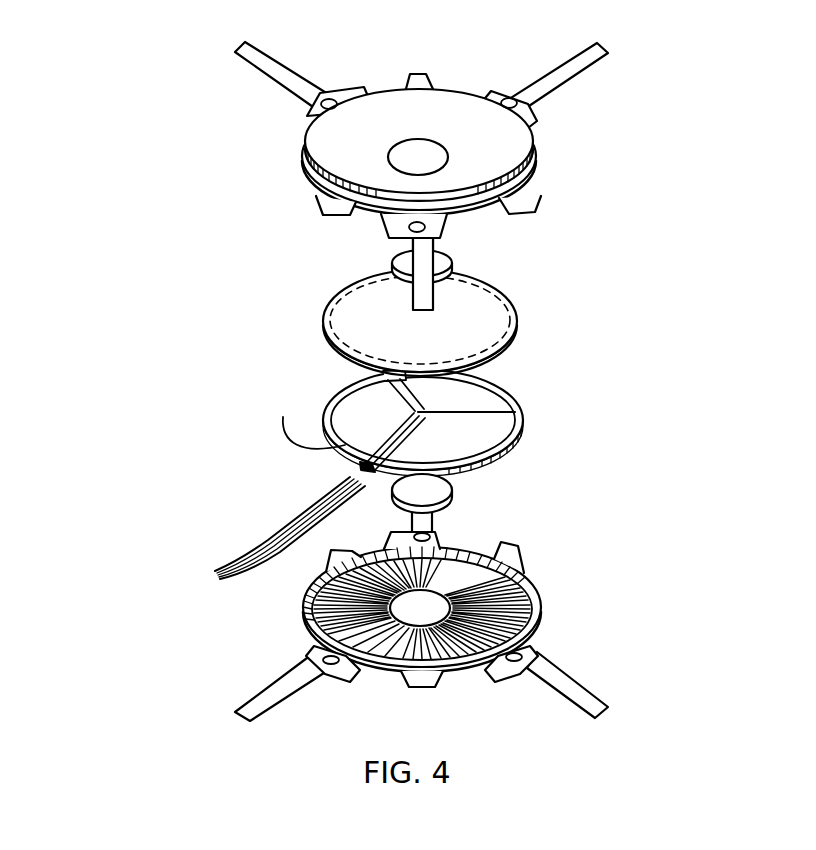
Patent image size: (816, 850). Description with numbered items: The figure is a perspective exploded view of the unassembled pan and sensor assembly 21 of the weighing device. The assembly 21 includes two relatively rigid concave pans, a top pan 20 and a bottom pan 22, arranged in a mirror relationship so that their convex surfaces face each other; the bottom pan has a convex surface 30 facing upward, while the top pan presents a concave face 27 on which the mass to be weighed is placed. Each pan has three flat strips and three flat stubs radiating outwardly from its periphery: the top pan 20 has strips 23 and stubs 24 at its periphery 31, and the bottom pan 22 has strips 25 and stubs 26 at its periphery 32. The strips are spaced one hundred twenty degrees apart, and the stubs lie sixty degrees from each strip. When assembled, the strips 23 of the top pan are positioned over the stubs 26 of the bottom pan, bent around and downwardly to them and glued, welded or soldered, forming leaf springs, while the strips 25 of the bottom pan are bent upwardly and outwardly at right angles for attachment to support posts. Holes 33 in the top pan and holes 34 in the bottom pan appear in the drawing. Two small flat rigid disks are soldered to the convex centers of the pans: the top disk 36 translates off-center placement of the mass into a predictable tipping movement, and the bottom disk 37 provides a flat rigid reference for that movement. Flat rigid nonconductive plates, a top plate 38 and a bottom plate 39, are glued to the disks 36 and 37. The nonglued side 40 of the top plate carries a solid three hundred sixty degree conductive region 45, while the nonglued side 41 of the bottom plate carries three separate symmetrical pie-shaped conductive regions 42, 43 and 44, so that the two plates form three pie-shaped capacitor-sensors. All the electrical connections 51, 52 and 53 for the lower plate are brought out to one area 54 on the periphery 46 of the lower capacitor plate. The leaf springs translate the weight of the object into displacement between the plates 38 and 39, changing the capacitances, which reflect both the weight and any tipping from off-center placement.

The pan and sensor assembly 21 is at (123, 150).
The top pan 20 is at (442, 95).
The bottom pan 22 is at (540, 590).
The flat strips of top pan 23 is at (245, 48).
The flat stubs of top pan 24 is at (416, 76).
The flat strips of bottom pan 25 is at (430, 522).
The flat stubs of bottom pan 26 is at (331, 553).
The concave face of top pan 27 is at (494, 139).
The convex surface of bottom pan 30 is at (469, 586).
The periphery of top pan 31 is at (538, 153).
The periphery of bottom pan 32 is at (304, 606).
The holes in first plate tabs 33 is at (330, 99).
The holes in second plate tabs 34 is at (431, 537).
The top disk 36 is at (438, 262).
The bottom disk 37 is at (440, 490).
The top plate 38 is at (498, 288).
The bottom plate 39 is at (523, 414).
The nonglued side of top plate 40 is at (500, 352).
The nonglued side of bottom plate 41 is at (508, 392).
The pie-shaped conductive region 42 is at (461, 404).
The pie-shaped conductive region 43 is at (461, 446).
The pie-shaped conductive region 44 is at (398, 431).
The solid conductive region 45 is at (506, 322).
The periphery of lower capacitor plate 46 is at (337, 400).
The electrical connection 51 is at (327, 500).
The electrical connection 52 is at (308, 522).
The electrical connection 53 is at (291, 550).
The connection area 54 is at (360, 466).